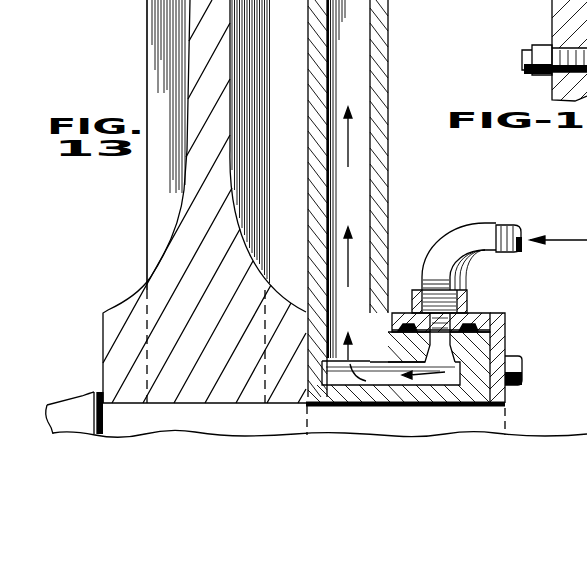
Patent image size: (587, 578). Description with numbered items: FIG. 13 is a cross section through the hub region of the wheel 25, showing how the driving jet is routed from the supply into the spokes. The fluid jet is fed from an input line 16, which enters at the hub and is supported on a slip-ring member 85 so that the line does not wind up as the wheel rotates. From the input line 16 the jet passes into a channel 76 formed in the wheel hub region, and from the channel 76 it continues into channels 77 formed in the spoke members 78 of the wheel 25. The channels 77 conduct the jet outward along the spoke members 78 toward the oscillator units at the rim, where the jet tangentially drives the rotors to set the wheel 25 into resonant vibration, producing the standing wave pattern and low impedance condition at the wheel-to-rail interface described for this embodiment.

The input line 16 is at (468, 238).
The wheel 25 is at (180, 258).
The channel 76 is at (440, 371).
The channels 77 is at (360, 63).
The spoke members 78 is at (383, 93).
The slip-ring member 85 is at (463, 313).